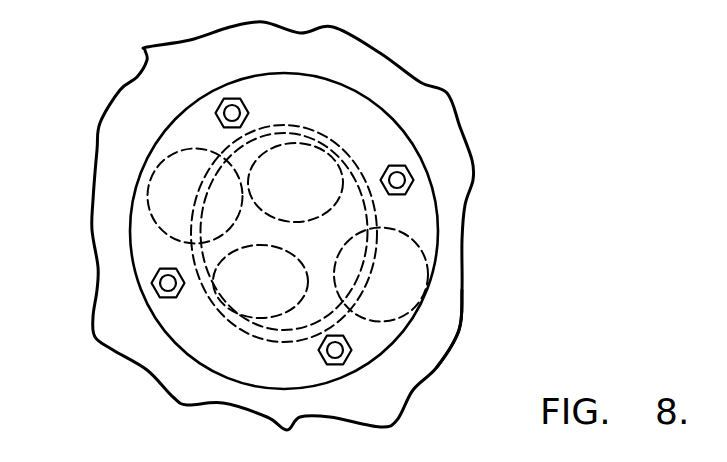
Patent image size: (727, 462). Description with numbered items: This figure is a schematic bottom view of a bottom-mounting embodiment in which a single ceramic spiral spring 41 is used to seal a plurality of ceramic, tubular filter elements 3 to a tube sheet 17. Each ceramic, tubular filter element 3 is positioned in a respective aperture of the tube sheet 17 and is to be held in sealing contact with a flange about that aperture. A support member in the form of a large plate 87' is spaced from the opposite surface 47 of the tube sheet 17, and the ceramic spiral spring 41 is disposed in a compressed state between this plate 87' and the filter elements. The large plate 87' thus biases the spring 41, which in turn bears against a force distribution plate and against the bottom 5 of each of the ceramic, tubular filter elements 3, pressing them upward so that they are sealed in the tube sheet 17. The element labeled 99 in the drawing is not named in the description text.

The ceramic tubular filter element 3 is at (168, 184).
The bottom wall 5 is at (187, 163).
The tube sheet 17 is at (448, 250).
The ceramic spiral spring 41 is at (200, 257).
The opposite surface of the tube sheet 47 is at (438, 313).
The large plate 87' is at (294, 202).
The nut 99 is at (403, 176).